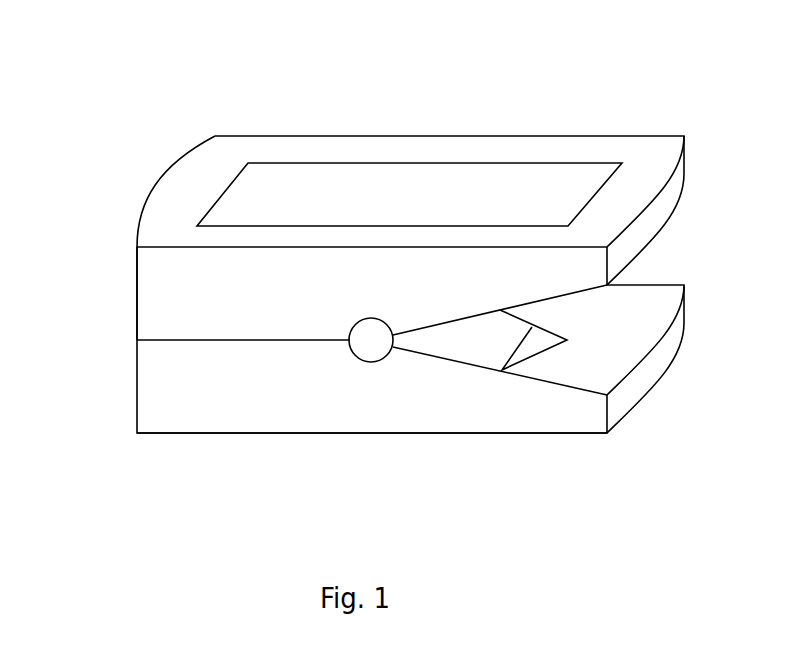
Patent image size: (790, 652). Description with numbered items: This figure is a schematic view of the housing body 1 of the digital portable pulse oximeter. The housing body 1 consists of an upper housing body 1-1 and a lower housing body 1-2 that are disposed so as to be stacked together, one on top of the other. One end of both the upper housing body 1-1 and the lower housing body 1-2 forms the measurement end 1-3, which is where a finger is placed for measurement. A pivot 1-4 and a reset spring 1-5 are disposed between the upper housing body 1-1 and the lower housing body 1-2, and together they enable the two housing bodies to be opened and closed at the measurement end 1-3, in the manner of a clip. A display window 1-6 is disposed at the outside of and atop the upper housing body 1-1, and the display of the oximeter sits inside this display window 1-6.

The housing body 1 is at (610, 120).
The upper housing body 1-1 is at (186, 185).
The lower housing body 1-2 is at (242, 410).
The measurement end 1-3 is at (135, 310).
The pivot 1-4 is at (370, 345).
The reset spring 1-5 is at (533, 350).
The display window 1-6 is at (395, 195).